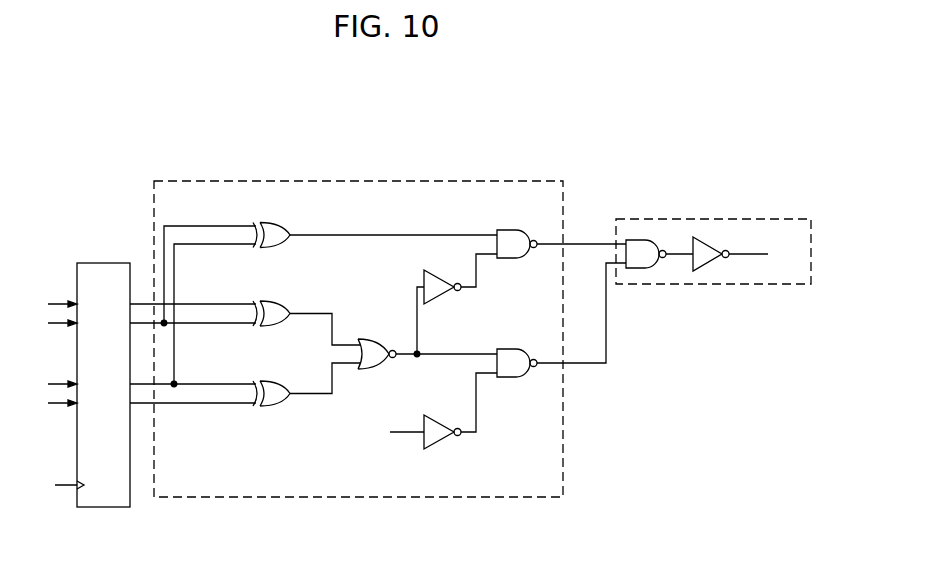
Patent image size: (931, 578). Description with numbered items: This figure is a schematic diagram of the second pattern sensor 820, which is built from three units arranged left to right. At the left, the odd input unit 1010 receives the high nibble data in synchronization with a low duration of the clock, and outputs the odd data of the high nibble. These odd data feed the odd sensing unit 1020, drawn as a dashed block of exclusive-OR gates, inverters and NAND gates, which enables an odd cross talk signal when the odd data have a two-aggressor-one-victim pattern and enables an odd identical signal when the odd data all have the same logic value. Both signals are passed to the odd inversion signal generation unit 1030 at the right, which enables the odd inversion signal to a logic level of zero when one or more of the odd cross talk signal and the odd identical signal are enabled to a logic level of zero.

The second pattern sensor 820 is at (686, 145).
The odd input unit 1010 is at (100, 507).
The odd sensing unit 1020 is at (513, 181).
The odd inversion signal generation unit 1030 is at (756, 219).